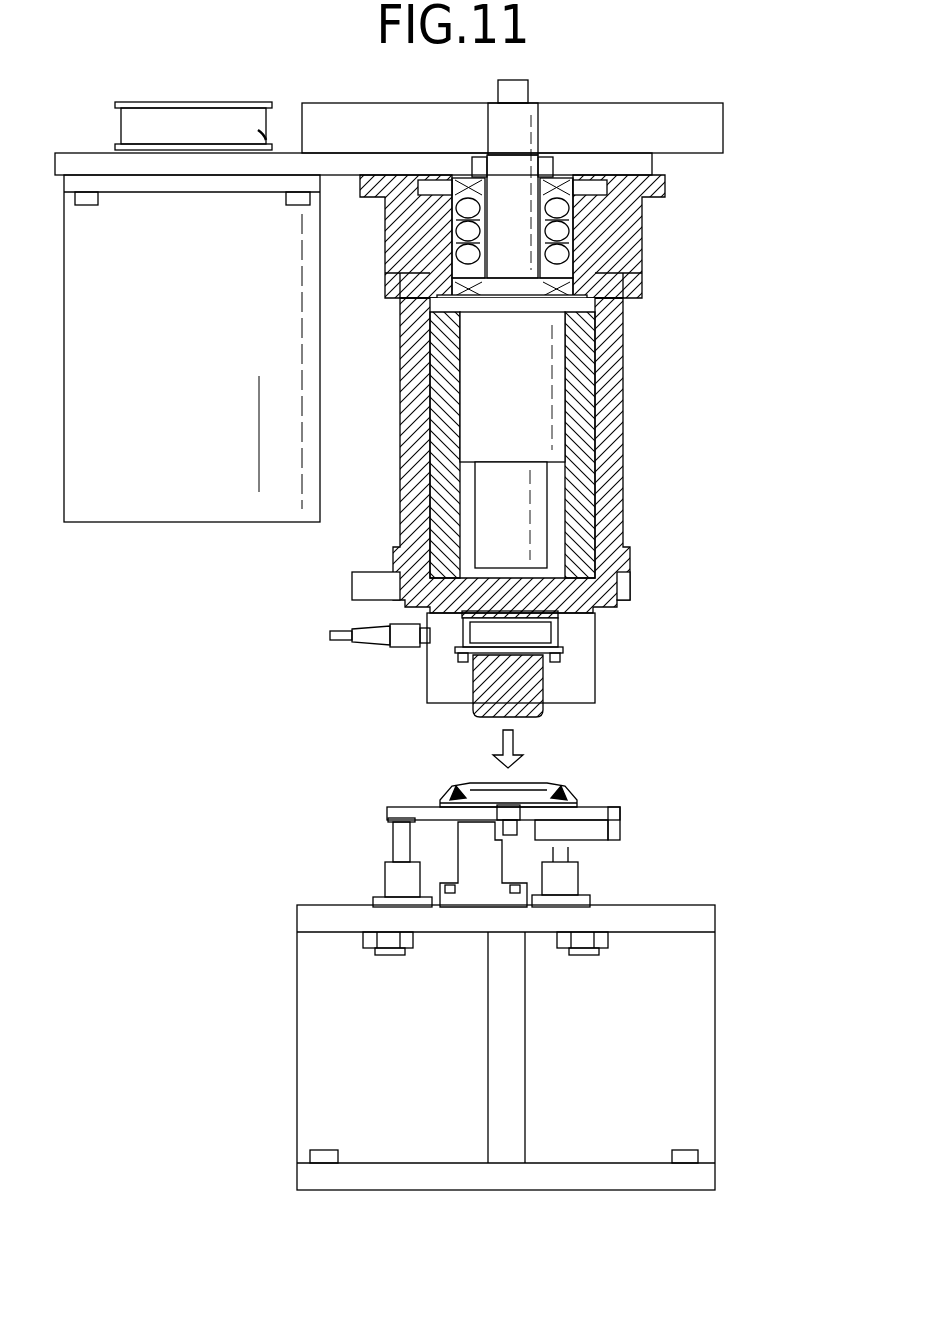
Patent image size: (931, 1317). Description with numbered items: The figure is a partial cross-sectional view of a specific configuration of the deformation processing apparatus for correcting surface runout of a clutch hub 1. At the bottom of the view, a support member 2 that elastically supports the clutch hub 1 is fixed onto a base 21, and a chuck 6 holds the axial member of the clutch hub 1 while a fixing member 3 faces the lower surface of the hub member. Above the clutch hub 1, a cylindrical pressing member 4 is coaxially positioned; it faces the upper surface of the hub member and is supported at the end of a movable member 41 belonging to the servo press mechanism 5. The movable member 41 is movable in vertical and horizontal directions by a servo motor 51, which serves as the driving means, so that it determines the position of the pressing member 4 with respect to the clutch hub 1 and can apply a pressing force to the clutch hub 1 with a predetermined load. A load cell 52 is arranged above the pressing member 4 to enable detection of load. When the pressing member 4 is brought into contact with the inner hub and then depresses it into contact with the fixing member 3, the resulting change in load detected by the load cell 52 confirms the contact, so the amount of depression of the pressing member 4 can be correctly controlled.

The clutch hub 1 is at (450, 797).
The support member 2 is at (620, 856).
The base 21 is at (297, 920).
The fixing member 3 is at (460, 853).
The pressing member 4 is at (545, 681).
The movable member 41 is at (575, 491).
The servo press mechanism 5 is at (654, 403).
The servo motor 51 is at (146, 523).
The load cell 52 is at (487, 631).
The chuck 6 is at (598, 832).